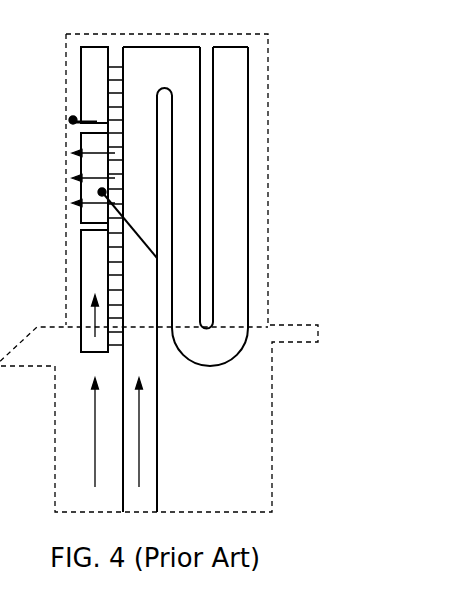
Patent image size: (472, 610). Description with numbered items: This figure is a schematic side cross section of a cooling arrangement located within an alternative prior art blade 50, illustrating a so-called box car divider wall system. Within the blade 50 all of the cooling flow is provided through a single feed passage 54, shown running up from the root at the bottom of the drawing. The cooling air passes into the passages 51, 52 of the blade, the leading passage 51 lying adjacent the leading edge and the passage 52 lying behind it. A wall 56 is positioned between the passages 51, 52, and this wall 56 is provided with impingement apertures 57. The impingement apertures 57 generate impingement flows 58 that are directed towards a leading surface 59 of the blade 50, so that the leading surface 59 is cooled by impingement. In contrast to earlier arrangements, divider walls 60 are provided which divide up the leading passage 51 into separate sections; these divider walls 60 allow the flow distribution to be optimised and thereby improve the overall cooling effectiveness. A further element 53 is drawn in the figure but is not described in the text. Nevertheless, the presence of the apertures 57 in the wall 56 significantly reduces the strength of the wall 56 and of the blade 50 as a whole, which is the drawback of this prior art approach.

The blade 50 is at (252, 387).
The leading passage 51 is at (93, 269).
The passage 52 is at (142, 170).
The inlet flow 53 is at (94, 318).
The feed passage 54 is at (140, 446).
The wall 56 is at (117, 60).
The impingement apertures 57 is at (117, 120).
The impingement flows 58 is at (157, 260).
The leading surface 59 is at (101, 190).
The divider walls 60 is at (73, 120).